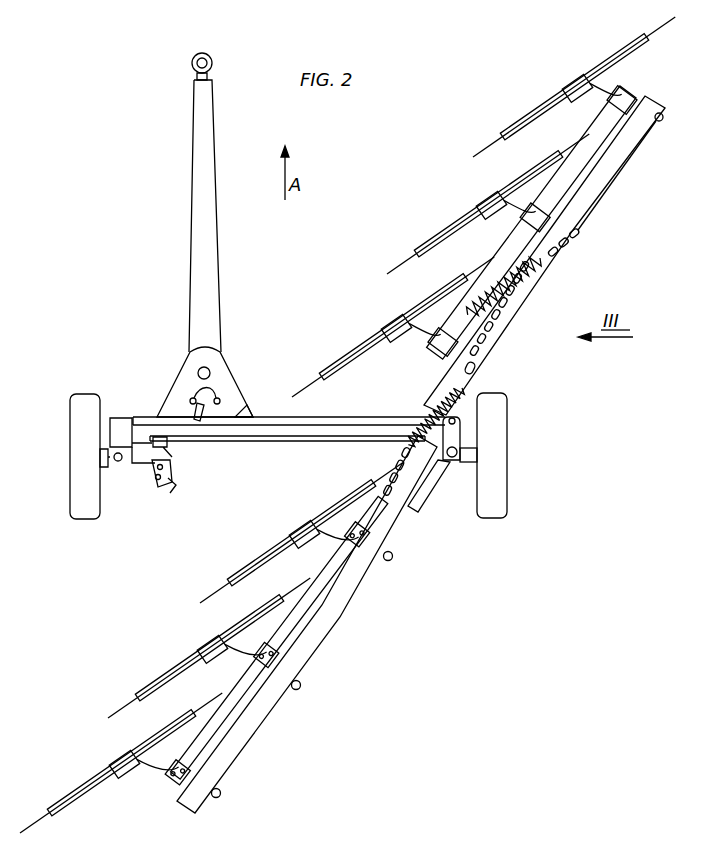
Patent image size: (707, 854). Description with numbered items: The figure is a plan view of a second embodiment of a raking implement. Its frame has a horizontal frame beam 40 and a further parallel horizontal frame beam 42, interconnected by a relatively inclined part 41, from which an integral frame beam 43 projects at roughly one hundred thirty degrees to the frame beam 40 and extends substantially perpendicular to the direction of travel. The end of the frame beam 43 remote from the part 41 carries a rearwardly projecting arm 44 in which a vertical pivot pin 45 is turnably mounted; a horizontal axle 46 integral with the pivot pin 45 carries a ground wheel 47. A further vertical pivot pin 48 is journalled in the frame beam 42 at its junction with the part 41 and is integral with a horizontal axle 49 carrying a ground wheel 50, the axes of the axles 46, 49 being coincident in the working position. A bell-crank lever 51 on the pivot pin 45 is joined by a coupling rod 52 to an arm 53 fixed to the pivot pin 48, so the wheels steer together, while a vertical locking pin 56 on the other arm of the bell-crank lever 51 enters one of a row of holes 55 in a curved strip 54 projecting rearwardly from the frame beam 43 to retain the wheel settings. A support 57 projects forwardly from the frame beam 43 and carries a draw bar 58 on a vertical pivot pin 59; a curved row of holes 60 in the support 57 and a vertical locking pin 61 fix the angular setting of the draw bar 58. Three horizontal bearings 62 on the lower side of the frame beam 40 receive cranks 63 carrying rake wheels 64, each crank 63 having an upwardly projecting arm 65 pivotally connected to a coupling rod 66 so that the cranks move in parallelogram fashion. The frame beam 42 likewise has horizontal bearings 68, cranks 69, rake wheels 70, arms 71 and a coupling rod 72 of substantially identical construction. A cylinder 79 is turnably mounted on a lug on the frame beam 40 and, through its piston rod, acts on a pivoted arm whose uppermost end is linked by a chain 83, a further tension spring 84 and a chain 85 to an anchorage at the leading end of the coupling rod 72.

The frame beam 40 is at (598, 190).
The inclined part 41 is at (462, 420).
The frame beam 42 is at (352, 590).
The frame beam 43 is at (300, 442).
The arm 44 is at (125, 416).
The vertical pivot pin 45 is at (116, 461).
The horizontal axle 46 is at (101, 456).
The ground wheel 47 is at (78, 522).
The vertical pivot pin 48 is at (420, 500).
The horizontal axle 49 is at (466, 465).
The ground wheel 50 is at (494, 500).
The bell-crank lever 51 is at (136, 465).
The coupling rod 52 is at (354, 416).
The arm 53 is at (462, 440).
The curved strip 54 is at (174, 470).
The holes 55 is at (171, 487).
The vertical locking pin 56 is at (173, 448).
The support 57 is at (241, 410).
The draw bar 58 is at (210, 204).
The vertical pivot pin 59 is at (210, 370).
The holes 60 is at (220, 399).
The vertical locking pin 61 is at (172, 389).
The horizontal bearings 62 is at (658, 124).
The cranks 63 is at (578, 101).
The rake wheels 64 is at (616, 50).
The arms 65 is at (626, 92).
The coupling rod 66 is at (608, 152).
The horizontal bearings 68 is at (393, 556).
The cranks 69 is at (304, 548).
The rake wheels 70 is at (256, 560).
The arms 71 is at (352, 536).
The coupling rod 72 is at (322, 632).
The cylinder 79 is at (526, 286).
The chain 83 is at (500, 342).
The tension spring 84 is at (408, 446).
The chain 85 is at (397, 505).